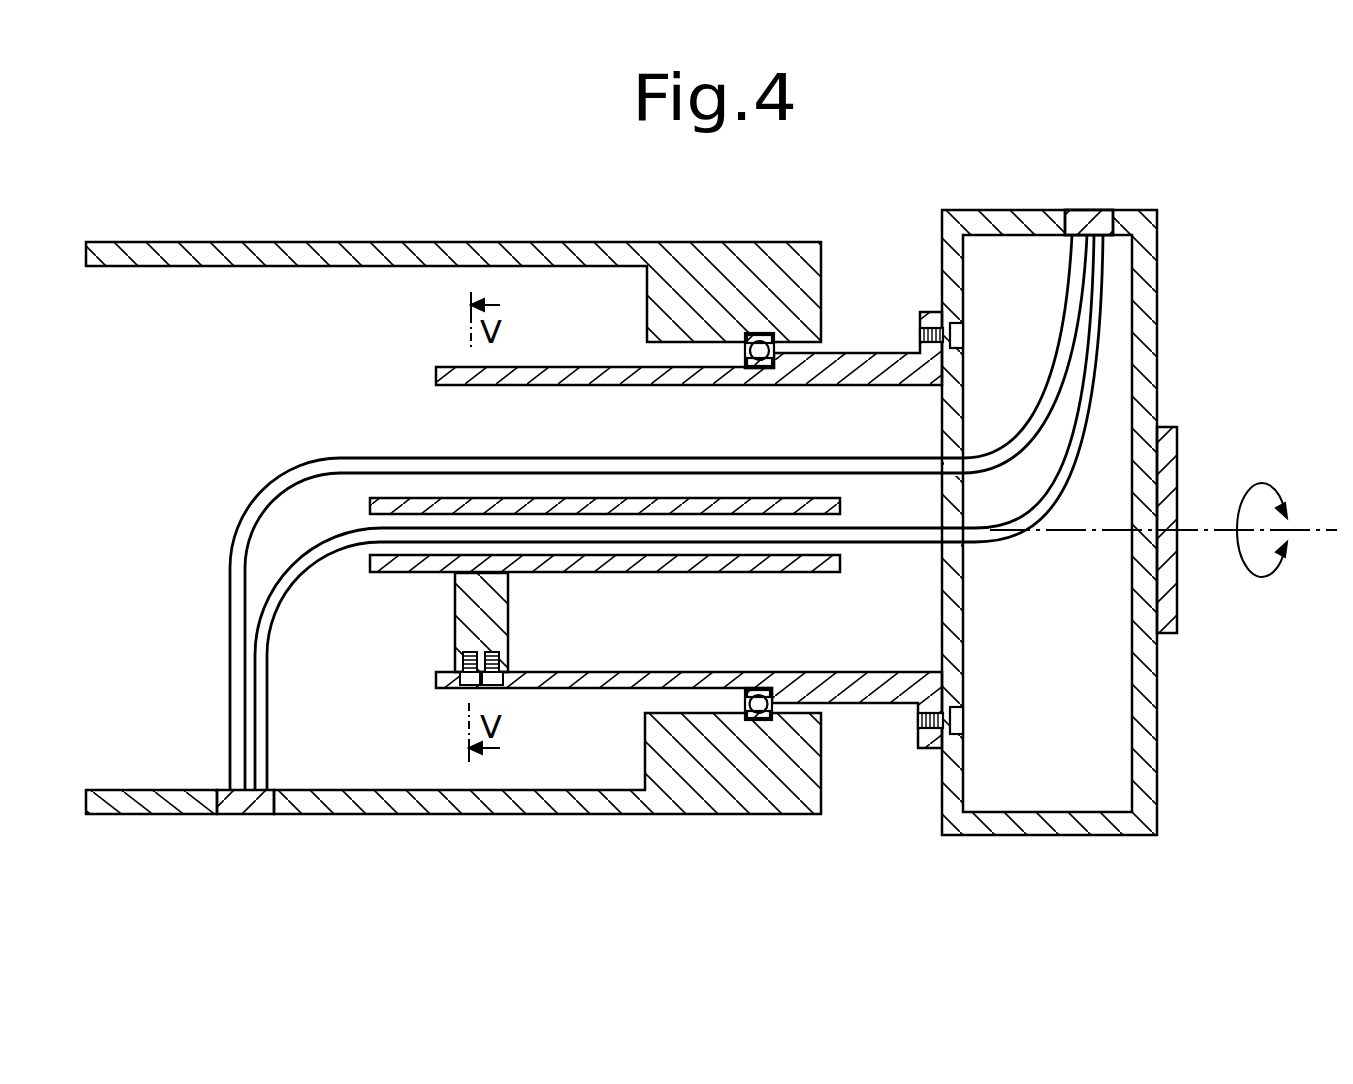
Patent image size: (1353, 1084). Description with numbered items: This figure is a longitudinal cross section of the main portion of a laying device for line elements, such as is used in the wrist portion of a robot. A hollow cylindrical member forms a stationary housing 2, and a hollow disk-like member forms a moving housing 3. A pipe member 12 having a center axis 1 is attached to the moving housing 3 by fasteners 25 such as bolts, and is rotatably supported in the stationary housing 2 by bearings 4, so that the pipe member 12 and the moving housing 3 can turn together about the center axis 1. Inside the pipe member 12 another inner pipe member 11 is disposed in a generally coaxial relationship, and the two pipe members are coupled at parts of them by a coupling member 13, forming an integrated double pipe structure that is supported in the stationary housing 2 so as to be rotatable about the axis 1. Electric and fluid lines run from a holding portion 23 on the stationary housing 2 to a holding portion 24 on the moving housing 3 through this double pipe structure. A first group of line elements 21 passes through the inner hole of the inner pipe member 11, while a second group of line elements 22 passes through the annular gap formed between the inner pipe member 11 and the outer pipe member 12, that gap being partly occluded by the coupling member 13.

The center axis 1 is at (1326, 533).
The stationary housing 2 is at (600, 816).
The moving housing 3 is at (1145, 820).
The bearings 4 is at (760, 722).
The inner pipe member 11 is at (663, 572).
The pipe member 12 is at (566, 680).
The coupling member 13 is at (470, 612).
The first group of line elements 21 is at (258, 706).
The second group of line elements 22 is at (243, 556).
The holding portion 23 is at (243, 815).
The holding portion 24 is at (1082, 218).
The fasteners 25 is at (966, 724).